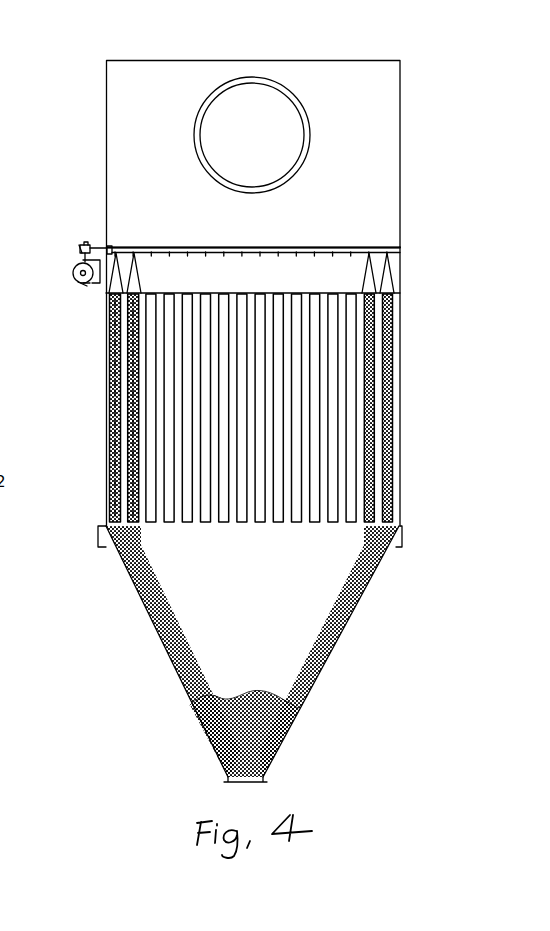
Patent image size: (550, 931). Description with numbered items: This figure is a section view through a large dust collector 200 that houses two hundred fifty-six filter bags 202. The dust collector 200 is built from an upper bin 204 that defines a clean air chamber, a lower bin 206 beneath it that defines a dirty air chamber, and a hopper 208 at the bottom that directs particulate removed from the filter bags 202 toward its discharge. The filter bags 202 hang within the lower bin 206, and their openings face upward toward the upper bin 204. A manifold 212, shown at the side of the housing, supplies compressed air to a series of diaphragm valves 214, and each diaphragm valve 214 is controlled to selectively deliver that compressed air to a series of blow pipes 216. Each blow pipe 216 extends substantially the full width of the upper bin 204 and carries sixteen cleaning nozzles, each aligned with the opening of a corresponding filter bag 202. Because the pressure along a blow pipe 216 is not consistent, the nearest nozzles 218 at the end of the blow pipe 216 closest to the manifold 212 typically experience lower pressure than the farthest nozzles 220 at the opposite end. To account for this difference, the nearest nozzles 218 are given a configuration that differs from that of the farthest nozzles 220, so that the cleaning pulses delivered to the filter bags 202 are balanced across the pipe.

The dust collector 200 is at (466, 92).
The filter bags 202 is at (312, 524).
The upper bin 204 is at (388, 181).
The lower bin 206 is at (400, 453).
The hopper 208 is at (336, 645).
The manifold 212 is at (76, 268).
The diaphragm valves 214 is at (85, 245).
The blow pipes 216 is at (362, 247).
The nearest nozzles 218 is at (137, 253).
The farthest nozzles 220 is at (368, 253).